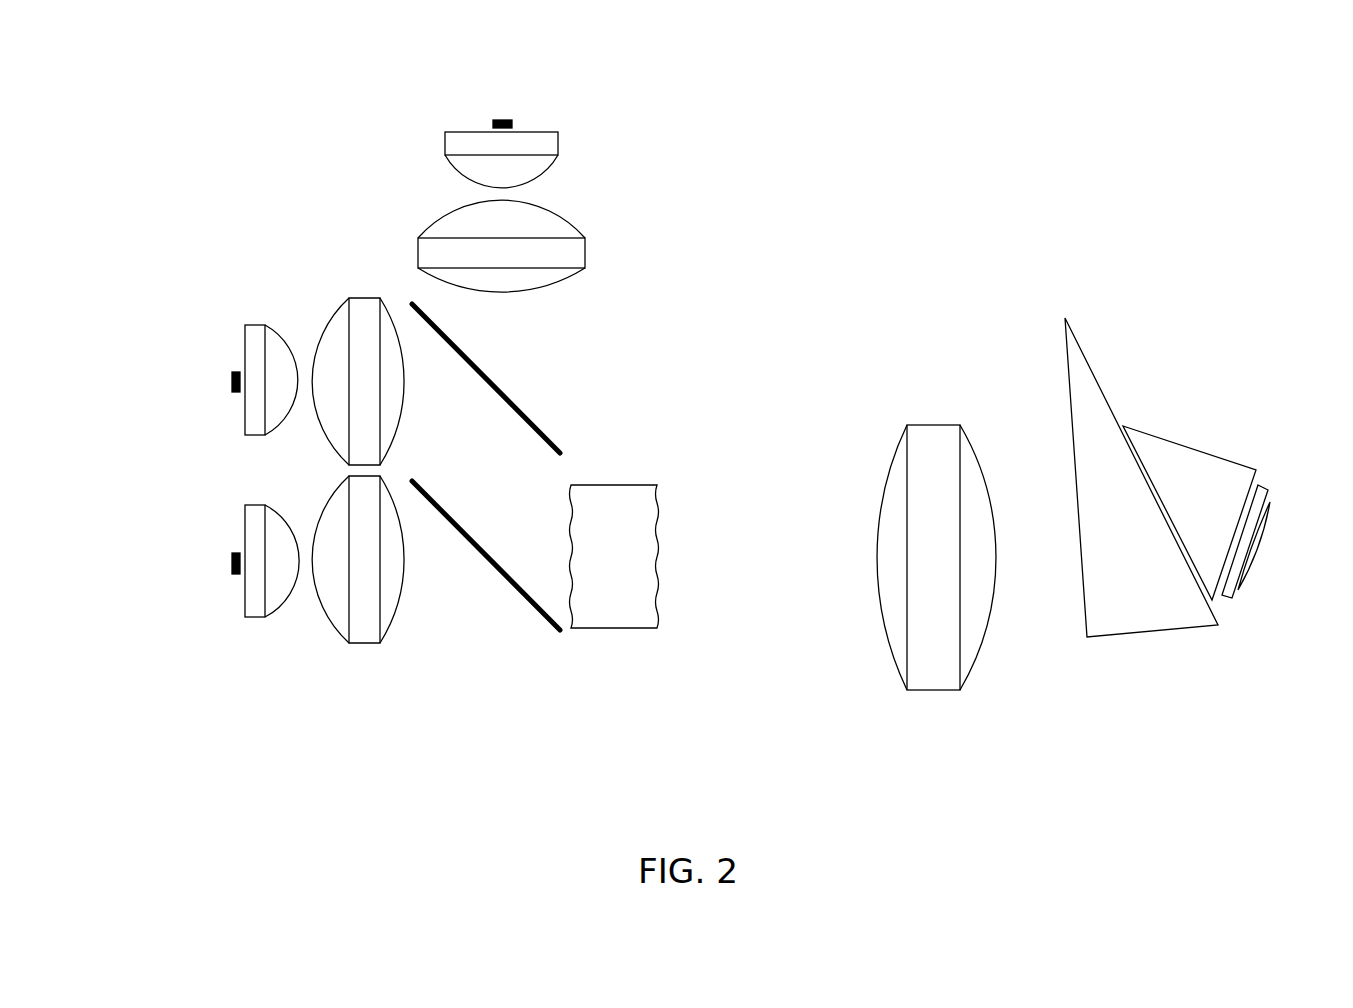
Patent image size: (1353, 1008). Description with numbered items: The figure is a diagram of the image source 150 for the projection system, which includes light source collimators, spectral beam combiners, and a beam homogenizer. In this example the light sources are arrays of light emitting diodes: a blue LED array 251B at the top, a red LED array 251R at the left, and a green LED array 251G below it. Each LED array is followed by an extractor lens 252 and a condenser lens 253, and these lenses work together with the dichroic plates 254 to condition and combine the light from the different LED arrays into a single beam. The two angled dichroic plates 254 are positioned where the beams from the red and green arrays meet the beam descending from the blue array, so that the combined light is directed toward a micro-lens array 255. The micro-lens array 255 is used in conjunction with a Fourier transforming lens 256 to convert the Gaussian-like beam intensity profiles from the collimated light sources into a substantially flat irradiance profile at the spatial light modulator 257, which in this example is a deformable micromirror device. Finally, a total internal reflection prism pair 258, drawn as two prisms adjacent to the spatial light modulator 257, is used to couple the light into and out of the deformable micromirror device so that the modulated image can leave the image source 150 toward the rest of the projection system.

The image source 150 is at (997, 116).
The blue LED array 251B is at (500, 82).
The red LED array 251R is at (247, 381).
The green LED array 251G is at (233, 559).
The extractor lens 252 is at (587, 154).
The condenser lens 253 is at (582, 246).
The dichroic plate 254 is at (544, 519).
The micro-lens array 255 is at (614, 598).
The Fourier transforming lens 256 is at (925, 501).
The spatial light modulator 257 is at (1281, 541).
The total internal reflection prism pair 258 is at (1160, 477).